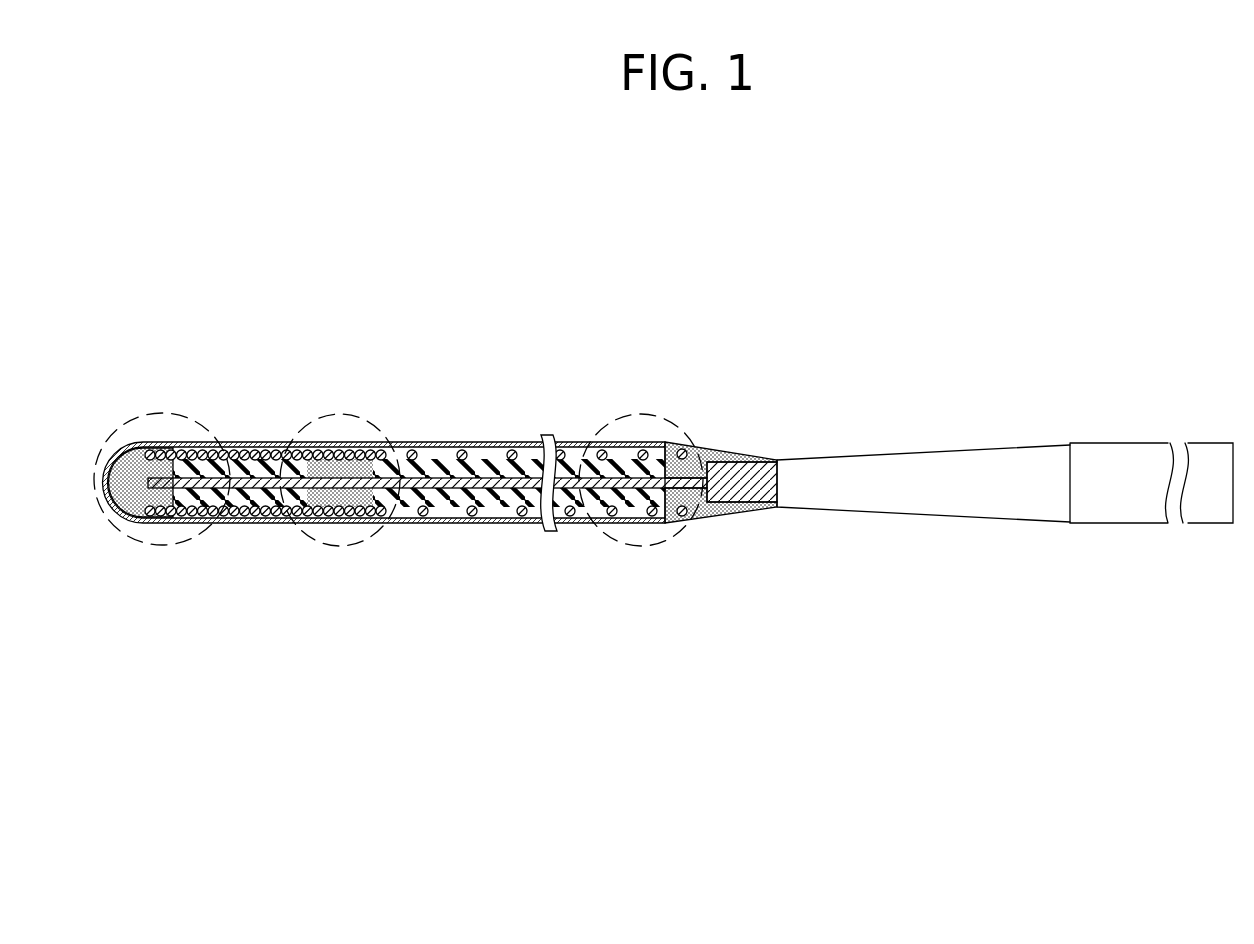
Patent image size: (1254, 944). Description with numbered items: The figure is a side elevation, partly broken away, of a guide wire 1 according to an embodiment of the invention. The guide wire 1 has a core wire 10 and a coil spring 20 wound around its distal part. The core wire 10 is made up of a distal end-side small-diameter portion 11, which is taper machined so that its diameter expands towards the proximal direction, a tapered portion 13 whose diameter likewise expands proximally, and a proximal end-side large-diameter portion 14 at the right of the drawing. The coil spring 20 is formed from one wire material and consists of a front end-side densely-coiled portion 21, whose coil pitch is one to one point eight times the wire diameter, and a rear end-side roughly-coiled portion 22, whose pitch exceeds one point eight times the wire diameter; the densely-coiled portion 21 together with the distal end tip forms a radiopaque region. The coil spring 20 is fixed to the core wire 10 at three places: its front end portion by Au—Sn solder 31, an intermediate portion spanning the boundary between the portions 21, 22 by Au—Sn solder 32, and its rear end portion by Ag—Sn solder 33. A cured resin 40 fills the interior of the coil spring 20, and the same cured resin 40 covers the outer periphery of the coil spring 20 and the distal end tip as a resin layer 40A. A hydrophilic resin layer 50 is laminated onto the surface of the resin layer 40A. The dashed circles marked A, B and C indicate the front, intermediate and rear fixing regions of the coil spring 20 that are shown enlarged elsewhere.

The medical device 1 is at (883, 198).
The core wire 10 is at (1005, 489).
The distal end-side small-diameter portion 11 is at (385, 488).
The tapered portion 13 is at (880, 502).
The proximal end-side large-diameter portion 14 is at (1090, 502).
The coil spring 20 is at (406, 501).
The front end-side densely-coiled portion 21 is at (300, 437).
The rear end-side roughly-coiled portion 22 is at (652, 437).
The Au—Sn solder 31 is at (122, 521).
The Au—Sn solder 32 is at (357, 500).
The Ag—Sn solder 33 is at (712, 497).
The cured resin 40 is at (228, 514).
The resin layer 40A is at (280, 458).
The hydrophilic resin layer 50 is at (443, 523).
The region A is at (140, 420).
The region B is at (355, 458).
The region C is at (663, 415).